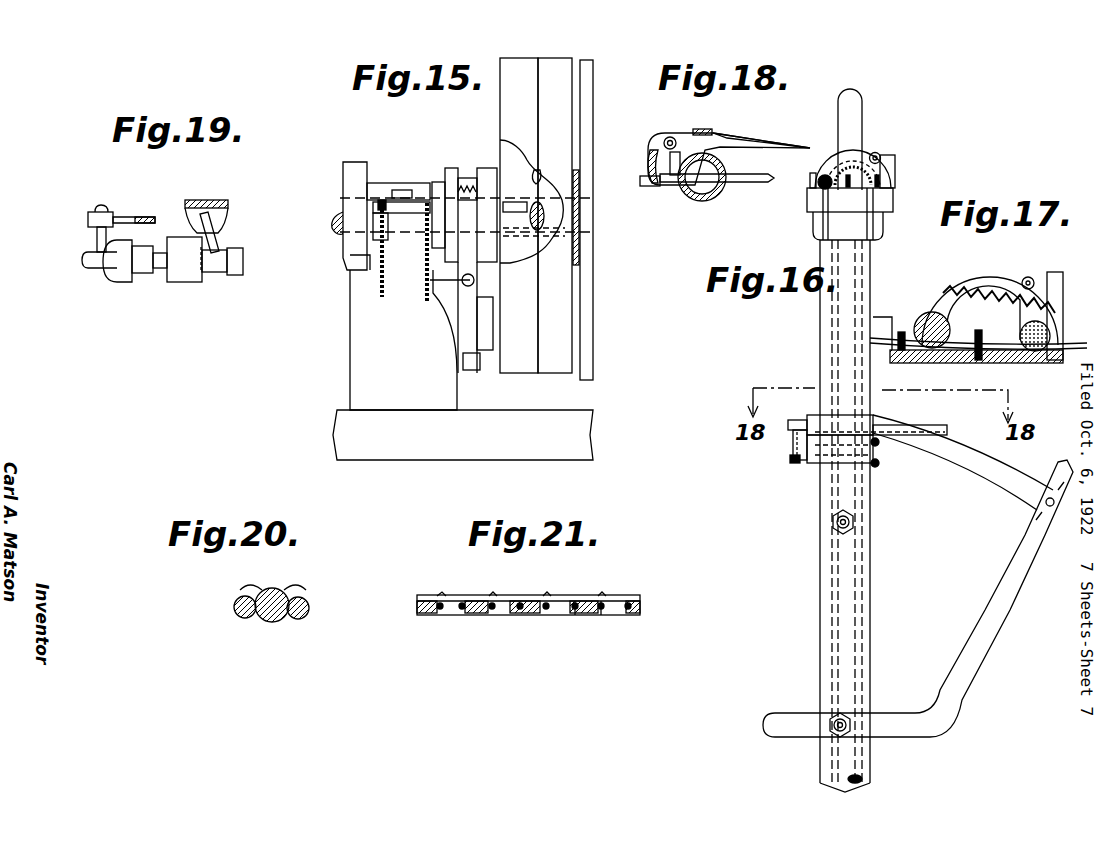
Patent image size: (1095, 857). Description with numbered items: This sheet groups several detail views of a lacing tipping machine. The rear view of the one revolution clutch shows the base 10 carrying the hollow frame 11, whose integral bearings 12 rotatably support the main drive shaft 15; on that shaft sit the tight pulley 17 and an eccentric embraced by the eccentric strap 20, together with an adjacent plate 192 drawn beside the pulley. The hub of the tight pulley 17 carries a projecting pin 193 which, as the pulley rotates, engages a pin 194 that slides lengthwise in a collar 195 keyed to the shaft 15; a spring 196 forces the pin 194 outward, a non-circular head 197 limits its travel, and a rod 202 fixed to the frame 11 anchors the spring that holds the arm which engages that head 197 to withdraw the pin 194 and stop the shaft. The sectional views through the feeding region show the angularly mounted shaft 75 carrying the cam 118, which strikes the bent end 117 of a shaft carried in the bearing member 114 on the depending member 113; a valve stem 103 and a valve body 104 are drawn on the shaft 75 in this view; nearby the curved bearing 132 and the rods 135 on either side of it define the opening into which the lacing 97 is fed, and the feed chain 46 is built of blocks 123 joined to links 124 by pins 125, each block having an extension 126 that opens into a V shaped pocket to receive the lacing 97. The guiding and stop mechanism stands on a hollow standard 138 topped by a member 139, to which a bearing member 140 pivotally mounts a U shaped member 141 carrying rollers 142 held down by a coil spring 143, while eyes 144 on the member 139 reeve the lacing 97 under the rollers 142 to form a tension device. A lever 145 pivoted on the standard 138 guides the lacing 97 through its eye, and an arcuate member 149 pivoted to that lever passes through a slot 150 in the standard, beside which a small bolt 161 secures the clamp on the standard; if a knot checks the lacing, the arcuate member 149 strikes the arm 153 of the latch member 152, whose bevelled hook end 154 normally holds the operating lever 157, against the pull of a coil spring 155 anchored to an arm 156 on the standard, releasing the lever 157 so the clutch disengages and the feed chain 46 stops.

In FIG. 15, the base 10 is at (400, 445).
In FIG. 15, the hollow frame 11 is at (353, 369).
In FIG. 15, the bearings 12 is at (386, 213).
In FIG. 15, the shaft 15 is at (335, 222).
In FIG. 15, the tight pulley 17 is at (548, 66).
In FIG. 15, the eccentric strap 20 is at (356, 168).
In FIG. 21, the feed chain 46 is at (572, 617).
In FIG. 19, the shaft 75 is at (98, 275).
In FIG. 17, the lacing 97 is at (886, 350).
In FIG. 20, the lacing 97 is at (293, 593).
In FIG. 19, the valve stem 103 is at (96, 238).
In FIG. 19, the valve body 104 is at (125, 282).
In FIG. 19, the member 113 is at (218, 200).
In FIG. 19, the bearing member 114 is at (226, 223).
In FIG. 19, the bent end 117 is at (222, 247).
In FIG. 19, the cam 118 is at (185, 282).
In FIG. 21, the blocks 123 is at (523, 617).
In FIG. 21, the links 124 is at (606, 617).
In FIG. 21, the pins 125 is at (605, 617).
In FIG. 21, the extension 126 is at (547, 598).
In FIG. 20, the curved bearing 132 is at (270, 622).
In FIG. 20, the rod 135 is at (243, 619).
In FIG. 16, the hollow standard 138 is at (864, 562).
In FIG. 16, the member 139 is at (813, 197).
In FIG. 17, the member 139 is at (1034, 357).
In FIG. 16, the bearing member 140 is at (895, 162).
In FIG. 17, the bearing member 140 is at (1045, 268).
In FIG. 16, the U shaped member 141 is at (868, 150).
In FIG. 17, the U shaped member 141 is at (963, 280).
In FIG. 17, the rollers 142 is at (915, 315).
In FIG. 17, the coil spring 143 is at (968, 306).
In FIG. 16, the eyes 144 is at (820, 180).
In FIG. 17, the eyes 144 is at (902, 332).
In FIG. 16, the lever 145 is at (1000, 596).
In FIG. 18, the arcuate member 149 is at (731, 190).
In FIG. 16, the arcuate member 149 is at (993, 477).
In FIG. 16, the slot 150 is at (870, 418).
In FIG. 18, the latch member 152 is at (727, 138).
In FIG. 18, the arm 153 is at (647, 184).
In FIG. 18, the bevelled hook end 154 is at (723, 133).
In FIG. 18, the coil spring 155 is at (650, 153).
In FIG. 16, the arm 156 is at (796, 462).
In FIG. 18, the operating lever 157 is at (697, 129).
In FIG. 16, the operating lever 157 is at (852, 105).
In FIG. 16, the bolt 161 is at (808, 467).
In FIG. 15, the cam plate 192 is at (518, 170).
In FIG. 15, the projecting pin 193 is at (550, 227).
In FIG. 15, the pin 194 is at (497, 190).
In FIG. 15, the collar 195 is at (490, 172).
In FIG. 15, the spring 196 is at (462, 200).
In FIG. 15, the non-circular head 197 is at (382, 266).
In FIG. 15, the rod 202 is at (456, 283).